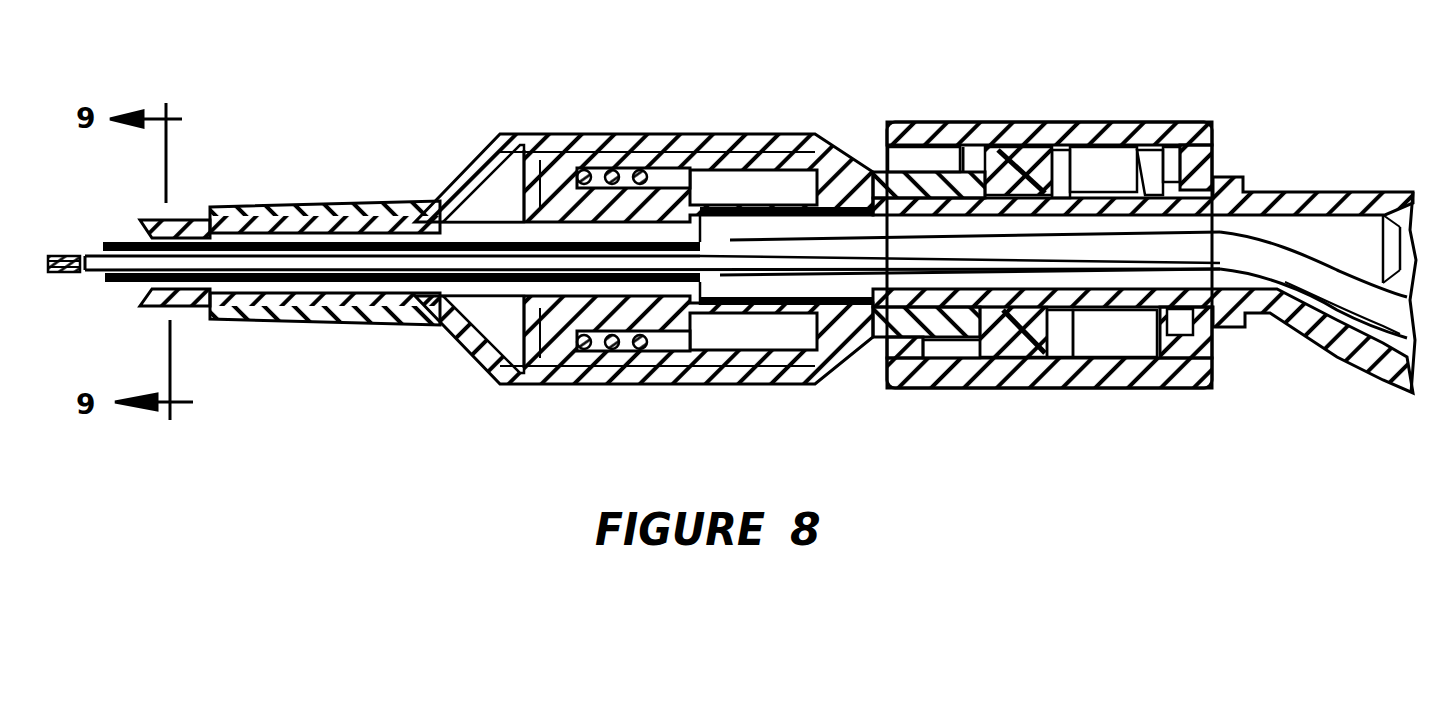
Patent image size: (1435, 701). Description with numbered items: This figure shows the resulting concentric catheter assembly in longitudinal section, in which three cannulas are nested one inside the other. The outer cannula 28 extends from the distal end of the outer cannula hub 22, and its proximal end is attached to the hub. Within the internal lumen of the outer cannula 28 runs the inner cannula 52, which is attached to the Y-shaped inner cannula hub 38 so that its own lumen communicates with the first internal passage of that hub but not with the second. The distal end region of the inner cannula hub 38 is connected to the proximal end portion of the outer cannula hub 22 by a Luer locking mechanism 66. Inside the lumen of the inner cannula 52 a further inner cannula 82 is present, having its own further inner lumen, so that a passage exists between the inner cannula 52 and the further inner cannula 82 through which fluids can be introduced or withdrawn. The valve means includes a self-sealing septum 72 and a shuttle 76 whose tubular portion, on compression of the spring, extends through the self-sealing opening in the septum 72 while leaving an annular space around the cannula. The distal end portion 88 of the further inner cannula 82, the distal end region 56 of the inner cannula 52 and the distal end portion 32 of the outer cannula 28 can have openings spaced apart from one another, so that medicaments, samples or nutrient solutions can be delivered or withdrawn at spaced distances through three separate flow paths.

The outer cannula hub 22 is at (590, 126).
The outer cannula 28 is at (342, 306).
The distal end portion of the outer cannula 32 is at (177, 310).
The inner cannula hub 38 is at (1348, 182).
The inner cannula 52 is at (165, 228).
The distal end region of the inner cannula 56 is at (112, 248).
The Luer locking mechanism 66 is at (1108, 112).
The self-sealing septum 72 is at (507, 200).
The shuttle 76 is at (675, 165).
The further inner cannula 82 is at (402, 276).
The distal end portion of the further inner cannula 88 is at (61, 253).